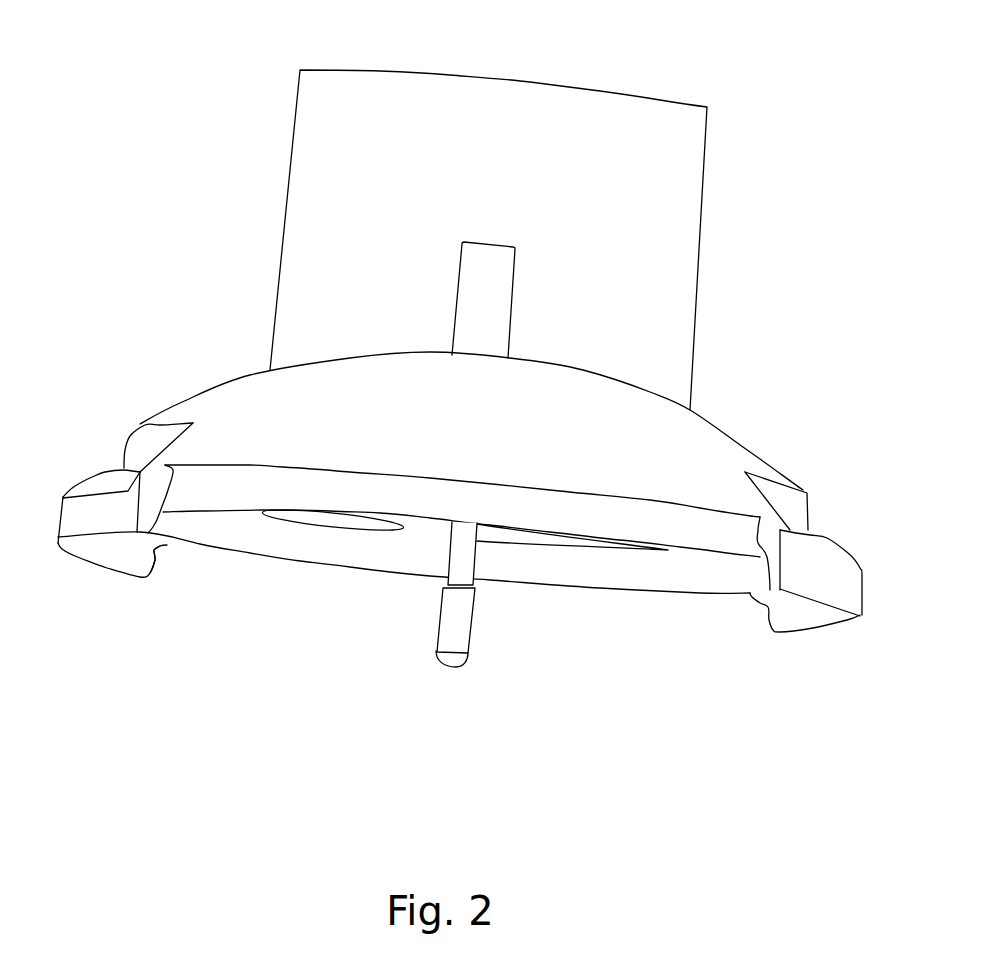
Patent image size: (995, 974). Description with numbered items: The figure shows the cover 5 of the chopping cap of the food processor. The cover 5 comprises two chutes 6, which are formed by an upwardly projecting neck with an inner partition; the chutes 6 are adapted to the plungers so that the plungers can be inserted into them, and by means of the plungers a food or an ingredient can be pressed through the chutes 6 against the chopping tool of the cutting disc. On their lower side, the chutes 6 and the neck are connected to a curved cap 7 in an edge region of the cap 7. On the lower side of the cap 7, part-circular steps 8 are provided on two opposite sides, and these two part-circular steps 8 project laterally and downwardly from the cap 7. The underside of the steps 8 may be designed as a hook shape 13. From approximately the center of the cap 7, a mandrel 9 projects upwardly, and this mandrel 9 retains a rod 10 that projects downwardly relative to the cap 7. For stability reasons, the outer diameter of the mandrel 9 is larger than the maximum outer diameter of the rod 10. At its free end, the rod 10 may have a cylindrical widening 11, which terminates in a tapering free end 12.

The cover 5 is at (175, 353).
The chutes 6 is at (348, 63).
The cap 7 is at (710, 437).
The part-circular steps 8 is at (110, 473).
The mandrel 9 is at (467, 298).
The rod 10 is at (463, 550).
The cylindrical widening 11 is at (467, 632).
The tapering free end 12 is at (442, 657).
The hook shape 13 is at (158, 550).